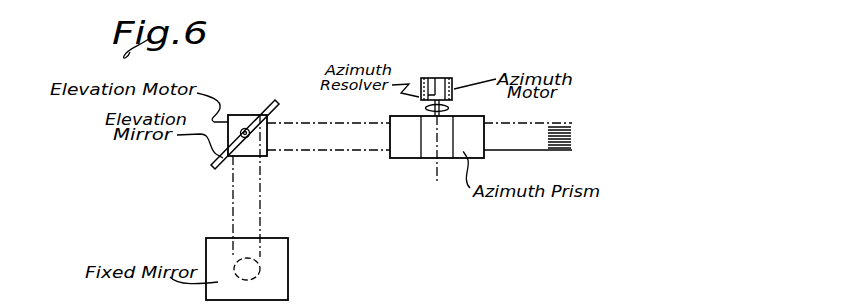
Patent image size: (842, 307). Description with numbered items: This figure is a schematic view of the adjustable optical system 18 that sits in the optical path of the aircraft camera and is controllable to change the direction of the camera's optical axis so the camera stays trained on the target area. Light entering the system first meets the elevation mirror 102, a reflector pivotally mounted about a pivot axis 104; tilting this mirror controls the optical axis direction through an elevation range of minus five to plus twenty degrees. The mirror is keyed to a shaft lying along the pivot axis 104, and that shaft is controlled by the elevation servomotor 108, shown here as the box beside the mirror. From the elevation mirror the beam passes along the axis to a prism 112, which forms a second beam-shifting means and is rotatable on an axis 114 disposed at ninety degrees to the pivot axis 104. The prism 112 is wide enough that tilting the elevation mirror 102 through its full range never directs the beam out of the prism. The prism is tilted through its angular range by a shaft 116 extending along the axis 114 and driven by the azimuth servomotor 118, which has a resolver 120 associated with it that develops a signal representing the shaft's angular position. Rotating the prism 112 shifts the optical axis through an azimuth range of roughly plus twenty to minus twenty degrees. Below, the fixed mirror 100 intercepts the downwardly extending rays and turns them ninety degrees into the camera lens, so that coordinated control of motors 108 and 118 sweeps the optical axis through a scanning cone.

The adjustable optical system 18 is at (545, 47).
The fixed mirror 100 is at (277, 263).
The elevation mirror 102 is at (278, 110).
The pivot axis 104 is at (249, 139).
The servomotor 108 is at (243, 117).
The prism 112 is at (428, 150).
The axis 114 is at (434, 181).
The shaft 116 is at (449, 108).
The servomotor 118 is at (448, 80).
The resolver 120 is at (431, 79).